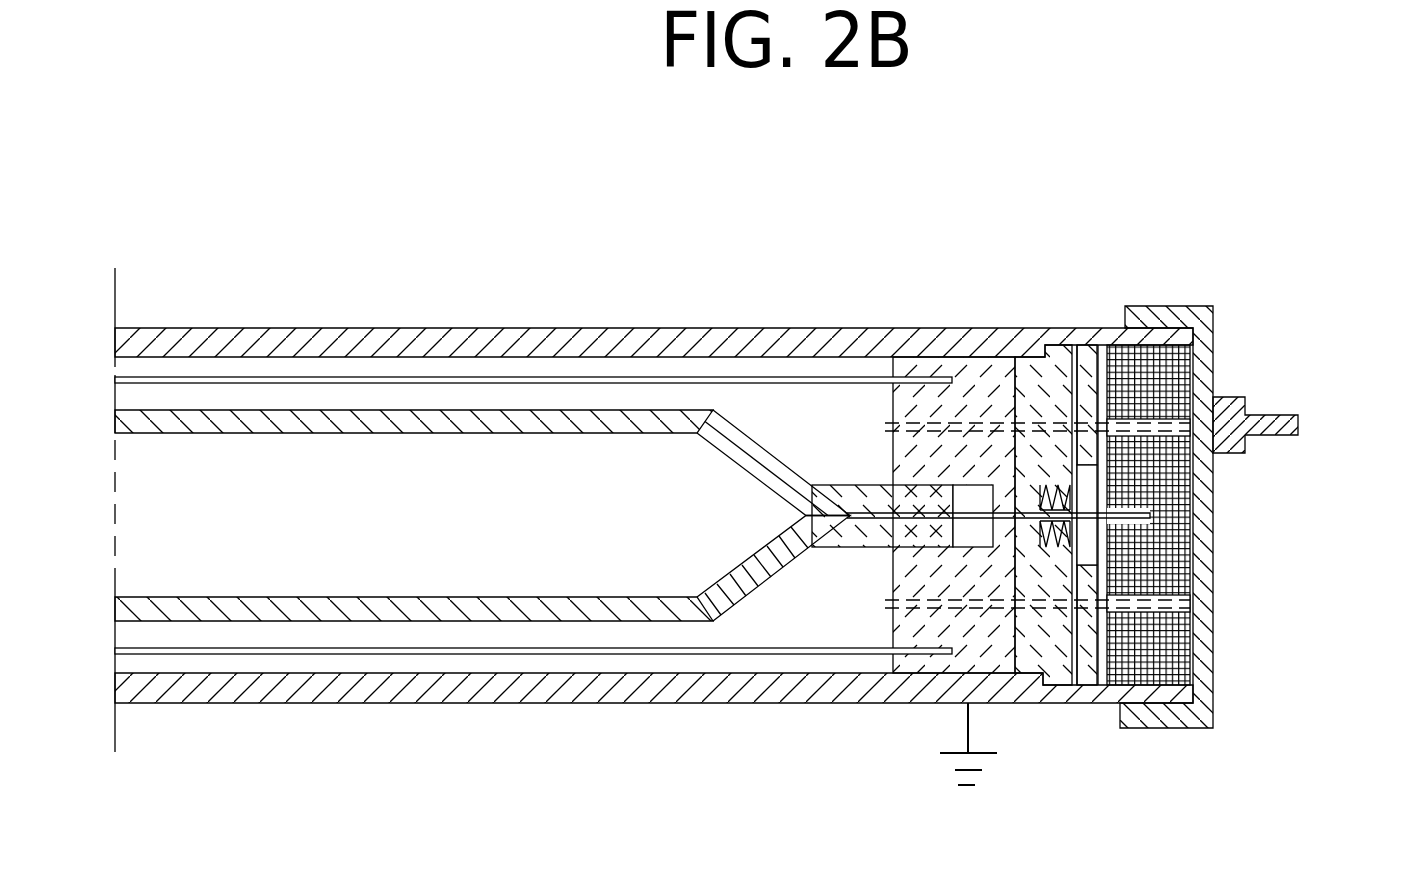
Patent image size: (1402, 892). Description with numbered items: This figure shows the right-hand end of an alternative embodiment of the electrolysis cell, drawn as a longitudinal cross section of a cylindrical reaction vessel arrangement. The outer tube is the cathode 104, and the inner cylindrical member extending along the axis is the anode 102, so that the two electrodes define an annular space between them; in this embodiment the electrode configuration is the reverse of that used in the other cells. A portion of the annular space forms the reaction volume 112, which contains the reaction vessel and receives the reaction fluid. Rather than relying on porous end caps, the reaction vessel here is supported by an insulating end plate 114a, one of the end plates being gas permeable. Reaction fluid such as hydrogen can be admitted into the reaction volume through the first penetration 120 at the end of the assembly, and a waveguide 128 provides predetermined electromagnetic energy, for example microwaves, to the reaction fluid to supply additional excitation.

The anode 102 is at (762, 447).
The cathode 104 is at (840, 328).
The reaction volume 112 is at (307, 397).
The insulating end plate 114a is at (977, 383).
The first penetration 120 is at (1270, 417).
The waveguide 128 is at (1150, 560).